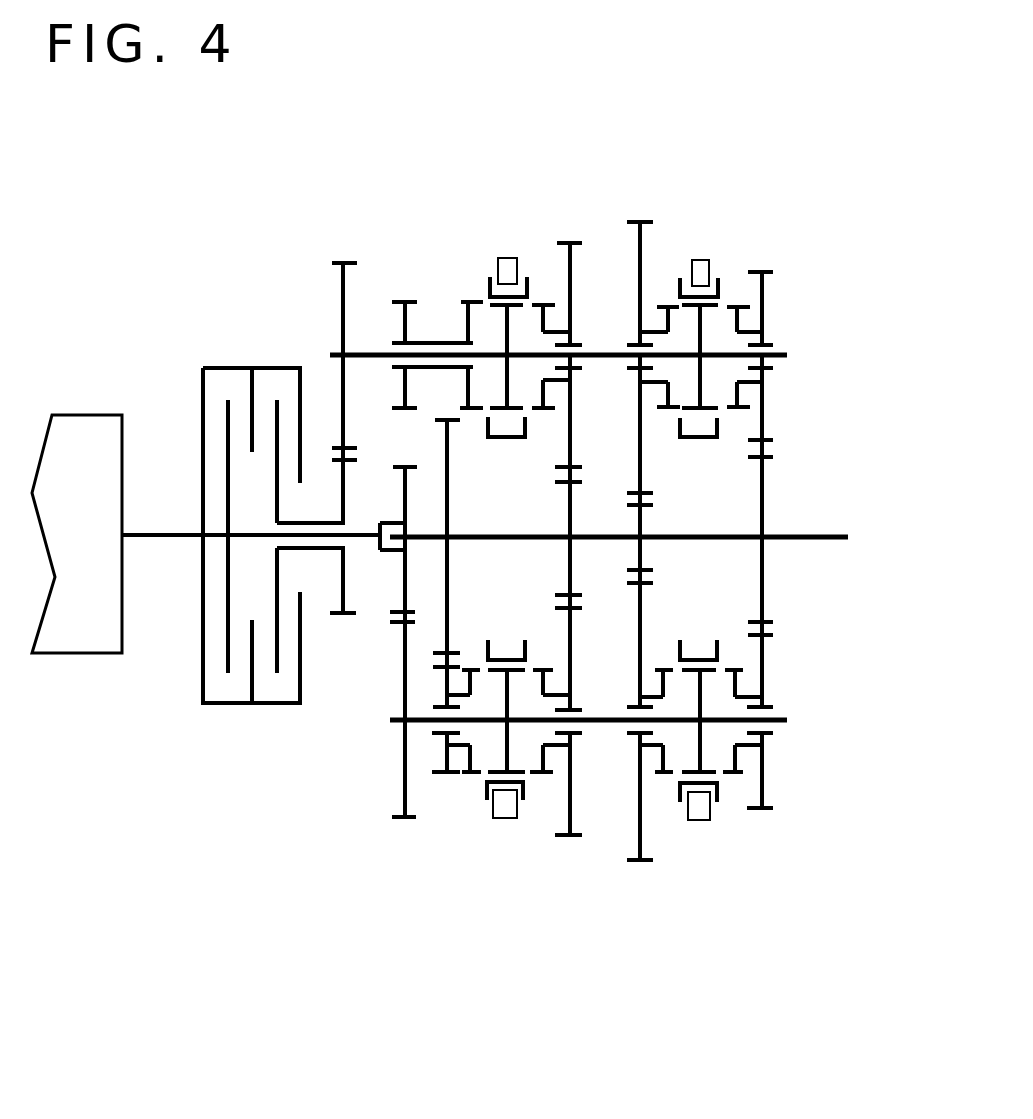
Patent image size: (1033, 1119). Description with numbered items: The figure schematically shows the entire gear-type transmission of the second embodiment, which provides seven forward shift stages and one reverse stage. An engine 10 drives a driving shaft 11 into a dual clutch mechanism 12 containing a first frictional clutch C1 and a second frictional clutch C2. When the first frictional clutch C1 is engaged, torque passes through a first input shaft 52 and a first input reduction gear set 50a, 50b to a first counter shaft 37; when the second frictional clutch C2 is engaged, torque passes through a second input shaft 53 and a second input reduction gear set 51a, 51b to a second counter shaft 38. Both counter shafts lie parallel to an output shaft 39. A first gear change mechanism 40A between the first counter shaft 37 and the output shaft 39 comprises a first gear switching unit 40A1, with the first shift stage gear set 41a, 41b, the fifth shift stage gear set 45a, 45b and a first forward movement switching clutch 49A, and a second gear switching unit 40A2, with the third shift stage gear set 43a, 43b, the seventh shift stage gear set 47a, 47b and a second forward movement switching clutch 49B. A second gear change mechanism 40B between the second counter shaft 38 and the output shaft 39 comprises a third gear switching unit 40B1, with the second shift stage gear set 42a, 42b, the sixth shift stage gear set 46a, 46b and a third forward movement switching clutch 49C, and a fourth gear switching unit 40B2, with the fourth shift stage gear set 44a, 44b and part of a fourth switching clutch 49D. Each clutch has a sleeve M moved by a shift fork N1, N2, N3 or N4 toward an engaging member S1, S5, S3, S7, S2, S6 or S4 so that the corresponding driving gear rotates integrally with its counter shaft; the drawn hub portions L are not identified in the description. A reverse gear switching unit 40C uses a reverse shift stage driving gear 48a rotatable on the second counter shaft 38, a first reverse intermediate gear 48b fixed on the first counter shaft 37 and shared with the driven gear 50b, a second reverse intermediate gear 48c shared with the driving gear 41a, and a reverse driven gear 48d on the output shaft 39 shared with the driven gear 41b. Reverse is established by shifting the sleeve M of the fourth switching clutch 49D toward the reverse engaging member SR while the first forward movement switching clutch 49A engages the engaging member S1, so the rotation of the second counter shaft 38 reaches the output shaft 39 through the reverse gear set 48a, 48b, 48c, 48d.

The engine 10 is at (85, 437).
The driving shaft 11 is at (163, 530).
The dual clutch mechanism 12 is at (208, 590).
The first frictional clutch C1 is at (227, 690).
The second frictional clutch C2 is at (265, 693).
The first counter shaft 37 is at (787, 723).
The second counter shaft 38 is at (787, 357).
The output shaft 39 is at (798, 535).
The first gear change mechanism 40A is at (568, 758).
The first gear switching unit 40A1 is at (472, 748).
The second gear switching unit 40A2 is at (721, 785).
The second gear change mechanism 40B is at (560, 413).
The third gear switching unit 40B1 is at (737, 309).
The fourth gear switching unit 40B2 is at (493, 306).
The reverse gear switching unit 40C is at (374, 303).
The 1st shift stage driving gear 41a is at (379, 774).
The 1st shift stage driven gear 41b is at (462, 516).
The 2nd shift stage driving gear 42a is at (762, 315).
The 2nd shift stage driven gear 42b is at (809, 531).
The 3rd shift stage driving gear 43a is at (762, 762).
The 3rd shift stage driven gear 43b is at (762, 557).
The 4th shift stage driving gear 44a is at (570, 430).
The 4th shift stage driven gear 44b is at (521, 623).
The 5th shift stage driving gear 45a is at (568, 763).
The 5th shift stage driven gear 45b is at (565, 567).
The 6th shift stage driving gear 46a is at (638, 428).
The 6th shift stage driven gear 46b is at (677, 622).
The 7th shift stage driving gear 47a is at (637, 622).
The 7th shift stage driven gear 47b is at (640, 553).
The reverse shift stage driving gear 48a is at (400, 390).
The first reverse shift stage intermediate gear 48b is at (400, 667).
The second reverse shift stage intermediate gear 48c is at (367, 774).
The reverse shift stage driven gear 48d is at (449, 497).
The first forward movement switching clutch 49A is at (466, 815).
The second forward movement switching clutch 49B is at (716, 820).
The third forward movement switching clutch 49C is at (723, 273).
The fourth switching clutch 49D is at (470, 290).
The first input reduction gear set driving gear 50a is at (400, 597).
The first input reduction gear set driven gear 50b is at (355, 682).
The second input reduction gear set gear 51a is at (342, 477).
The second input reduction gear set gear 51b is at (341, 300).
The first input shaft 52 is at (355, 532).
The second input shaft 53 is at (293, 549).
The sleeve M is at (488, 277).
The shift fork N1 is at (500, 822).
The shift fork N2 is at (697, 837).
The shift fork N3 is at (702, 262).
The shift fork N4 is at (507, 262).
The dog clutch hub L is at (510, 315).
The reverse shift stage engaging member SR is at (468, 415).
The 1st shift stage engaging member S1 is at (467, 665).
The 2nd shift stage engaging member S2 is at (736, 418).
The 3rd shift stage engaging member S3 is at (736, 665).
The 4th shift stage engaging member S4 is at (540, 413).
The 5th shift stage engaging member S5 is at (543, 665).
The 6th shift stage engaging member S6 is at (668, 418).
The 7th shift stage engaging member S7 is at (662, 665).